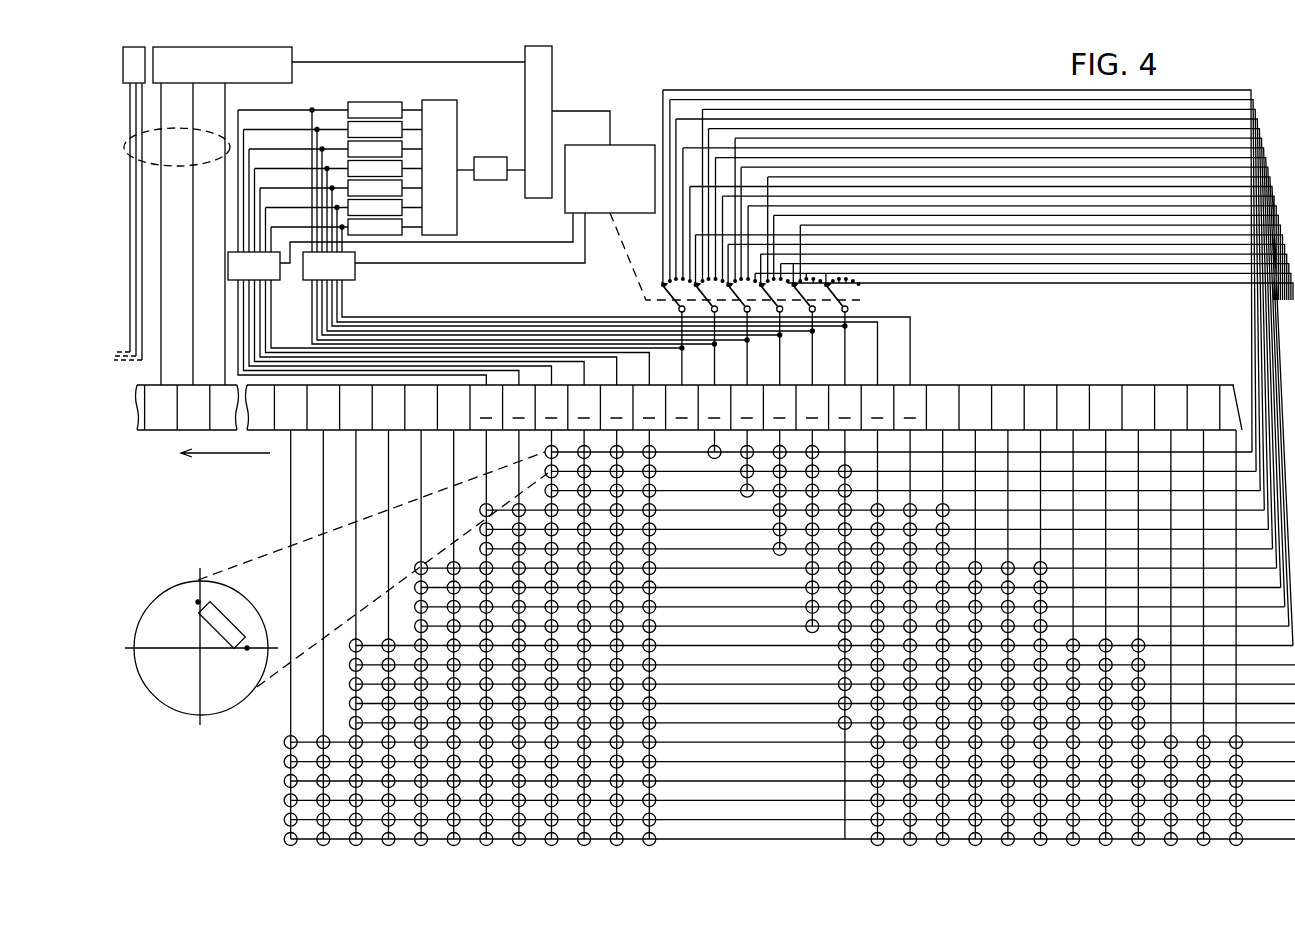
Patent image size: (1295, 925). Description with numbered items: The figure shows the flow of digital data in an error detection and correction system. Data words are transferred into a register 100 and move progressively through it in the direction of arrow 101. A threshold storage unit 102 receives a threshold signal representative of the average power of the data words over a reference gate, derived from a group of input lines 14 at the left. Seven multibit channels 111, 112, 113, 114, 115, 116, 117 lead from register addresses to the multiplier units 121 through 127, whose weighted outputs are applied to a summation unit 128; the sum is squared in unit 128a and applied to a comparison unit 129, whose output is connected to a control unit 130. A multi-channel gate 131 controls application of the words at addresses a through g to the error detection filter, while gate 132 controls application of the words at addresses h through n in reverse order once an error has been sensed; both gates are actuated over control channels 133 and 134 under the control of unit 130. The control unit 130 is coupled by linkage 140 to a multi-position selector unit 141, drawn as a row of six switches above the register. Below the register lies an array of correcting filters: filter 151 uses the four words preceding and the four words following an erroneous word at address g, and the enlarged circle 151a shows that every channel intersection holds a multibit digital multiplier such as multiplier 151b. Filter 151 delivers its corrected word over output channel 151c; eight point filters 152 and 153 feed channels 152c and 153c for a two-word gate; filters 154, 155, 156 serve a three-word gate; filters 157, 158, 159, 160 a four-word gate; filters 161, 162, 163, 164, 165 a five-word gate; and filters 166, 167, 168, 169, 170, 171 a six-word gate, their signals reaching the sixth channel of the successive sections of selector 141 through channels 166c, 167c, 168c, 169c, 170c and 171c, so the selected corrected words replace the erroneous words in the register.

The input lines 14 is at (177, 168).
The register 100 is at (170, 433).
The arrow 101 is at (242, 457).
The threshold storage unit 102 is at (287, 48).
The channel 111 is at (285, 110).
The channel 112 is at (290, 130).
The channel 113 is at (296, 149).
The channel 114 is at (302, 168).
The channel 115 is at (307, 188).
The channel 116 is at (312, 208).
The channel 117 is at (318, 227).
The multiplier unit 121 is at (383, 102).
The multiplier unit 127 is at (375, 237).
The summation unit 128 is at (436, 106).
The squaring unit 128a is at (487, 181).
The comparison unit 129 is at (553, 61).
The control unit 130 is at (627, 150).
The multi-channel gate 131 is at (228, 258).
The gate 132 is at (356, 272).
The control channel 133 is at (540, 242).
The control channel 134 is at (545, 268).
The linkage 140 is at (634, 259).
The multi-position selector unit 141 is at (845, 291).
The filter 151 is at (544, 452).
The eight point filter 152 is at (544, 471).
The eight point filter 153 is at (544, 491).
The filter 154 is at (479, 510).
The filter 155 is at (479, 529).
The filter 156 is at (479, 549).
The filter 157 is at (414, 568).
The filter 158 is at (414, 588).
The filter 159 is at (414, 607).
The filter 160 is at (414, 626).
The filter 161 is at (349, 646).
The filter 162 is at (349, 665).
The filter 163 is at (349, 684).
The filter 164 is at (349, 704).
The filter 165 is at (349, 723).
The filter 166 is at (284, 742).
The filter 167 is at (284, 762).
The filter 168 is at (284, 781).
The filter 169 is at (284, 800).
The filter 170 is at (284, 820).
The filter 171 is at (284, 839).
The circle 151a is at (224, 584).
The multiplier 151b is at (236, 617).
The output channel 151c is at (814, 90).
The channel 152c is at (904, 99).
The channel 153c is at (992, 108).
The channel 166c is at (958, 238).
The channel 167c is at (1020, 248).
The channel 168c is at (1077, 257).
The channel 169c is at (1130, 267).
The channel 170c is at (1185, 275).
The channel 171c is at (1232, 292).